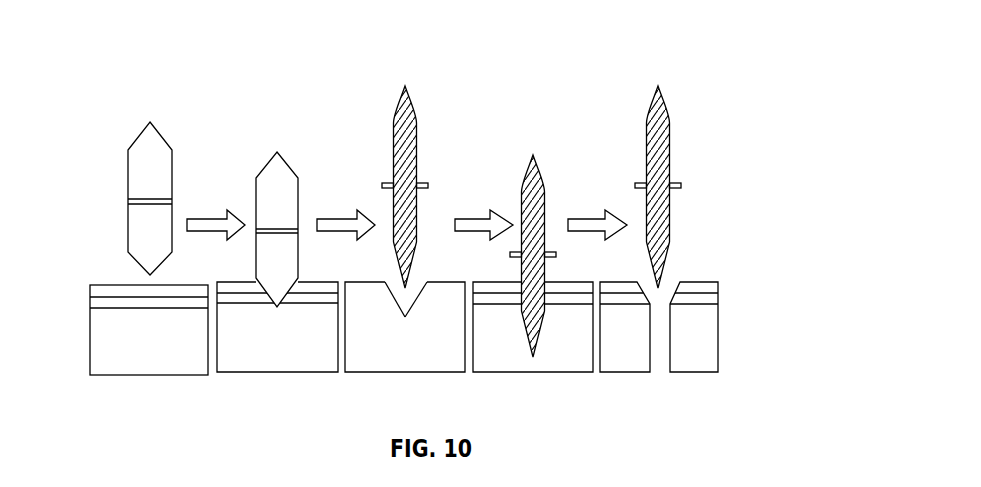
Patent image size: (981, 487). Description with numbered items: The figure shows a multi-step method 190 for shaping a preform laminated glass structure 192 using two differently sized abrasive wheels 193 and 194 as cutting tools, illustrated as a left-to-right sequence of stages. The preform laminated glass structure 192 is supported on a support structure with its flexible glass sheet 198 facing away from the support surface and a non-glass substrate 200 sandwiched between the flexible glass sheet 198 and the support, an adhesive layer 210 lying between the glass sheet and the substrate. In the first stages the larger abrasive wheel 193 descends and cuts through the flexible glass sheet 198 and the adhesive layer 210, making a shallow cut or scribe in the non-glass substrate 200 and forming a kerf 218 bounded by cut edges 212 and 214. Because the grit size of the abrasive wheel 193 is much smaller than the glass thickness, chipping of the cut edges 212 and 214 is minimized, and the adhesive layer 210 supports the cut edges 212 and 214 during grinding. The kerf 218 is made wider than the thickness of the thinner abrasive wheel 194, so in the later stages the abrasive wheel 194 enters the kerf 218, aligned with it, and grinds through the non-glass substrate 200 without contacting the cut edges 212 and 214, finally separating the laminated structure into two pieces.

The multi-step method 190 is at (550, 76).
The preform laminated glass structure 192 is at (70, 265).
The abrasive wheel 193 is at (163, 163).
The abrasive wheel 194 is at (417, 143).
The flexible glass sheet 198 is at (92, 285).
The non-glass substrate 200 is at (107, 358).
The adhesive layer 210 is at (163, 302).
The cut edge 212 is at (255, 282).
The cut edge 214 is at (300, 282).
The kerf 218 is at (416, 270).